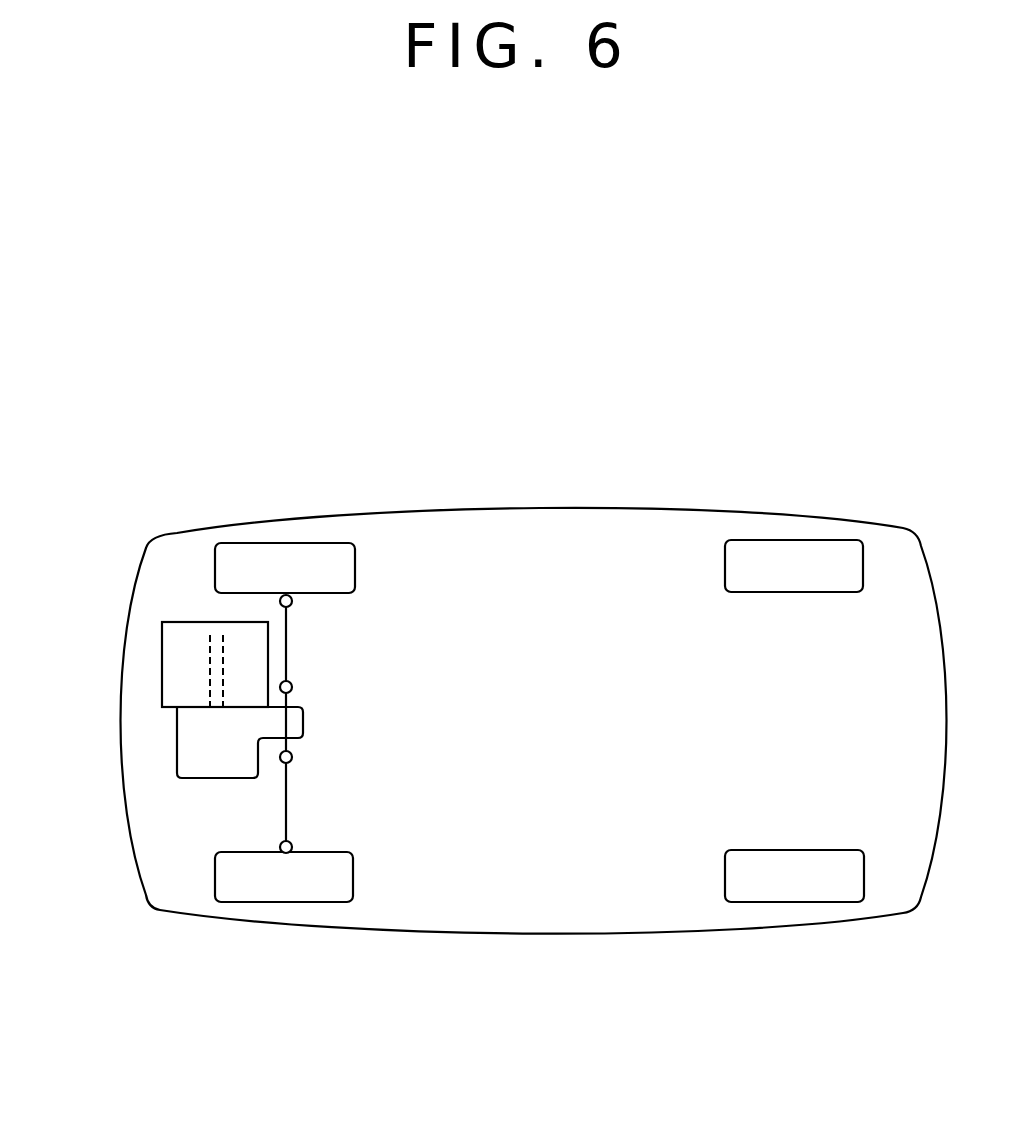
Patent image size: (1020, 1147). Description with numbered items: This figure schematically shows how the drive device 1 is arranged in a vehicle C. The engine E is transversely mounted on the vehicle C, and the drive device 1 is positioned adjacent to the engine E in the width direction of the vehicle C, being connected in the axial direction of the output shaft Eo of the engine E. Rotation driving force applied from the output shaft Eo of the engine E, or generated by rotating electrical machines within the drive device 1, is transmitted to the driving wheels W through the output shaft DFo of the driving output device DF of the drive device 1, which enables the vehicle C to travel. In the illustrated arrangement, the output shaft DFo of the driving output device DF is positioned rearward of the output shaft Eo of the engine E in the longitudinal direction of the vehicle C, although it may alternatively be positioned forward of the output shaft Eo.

The vehicle C is at (167, 516).
The driving wheels W is at (312, 555).
The engine E is at (168, 692).
The output shaft Eo is at (210, 658).
The drive device 1 is at (198, 738).
The driving output device DF is at (293, 722).
The output shaft DFo is at (296, 700).